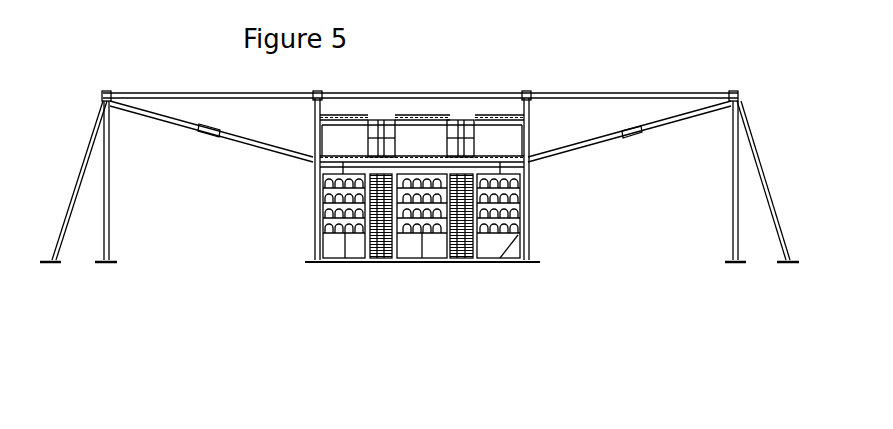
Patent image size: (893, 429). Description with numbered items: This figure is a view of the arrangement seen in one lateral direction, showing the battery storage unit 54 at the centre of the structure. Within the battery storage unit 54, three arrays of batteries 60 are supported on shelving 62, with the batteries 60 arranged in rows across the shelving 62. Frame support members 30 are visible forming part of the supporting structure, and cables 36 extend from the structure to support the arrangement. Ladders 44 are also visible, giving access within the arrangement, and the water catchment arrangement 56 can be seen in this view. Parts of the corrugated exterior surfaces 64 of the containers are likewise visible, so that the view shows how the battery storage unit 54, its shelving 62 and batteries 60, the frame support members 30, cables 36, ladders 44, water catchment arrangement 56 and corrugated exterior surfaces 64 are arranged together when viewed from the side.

The frame support members 30 is at (449, 151).
The cables 36 is at (451, 140).
The ladders 44 is at (467, 134).
The battery storage unit 54 is at (558, 236).
The water catchment arrangement 56 is at (312, 164).
The arrays of batteries 60 is at (325, 212).
The shelving 62 is at (328, 188).
The corrugated exterior surfaces 64 is at (464, 238).